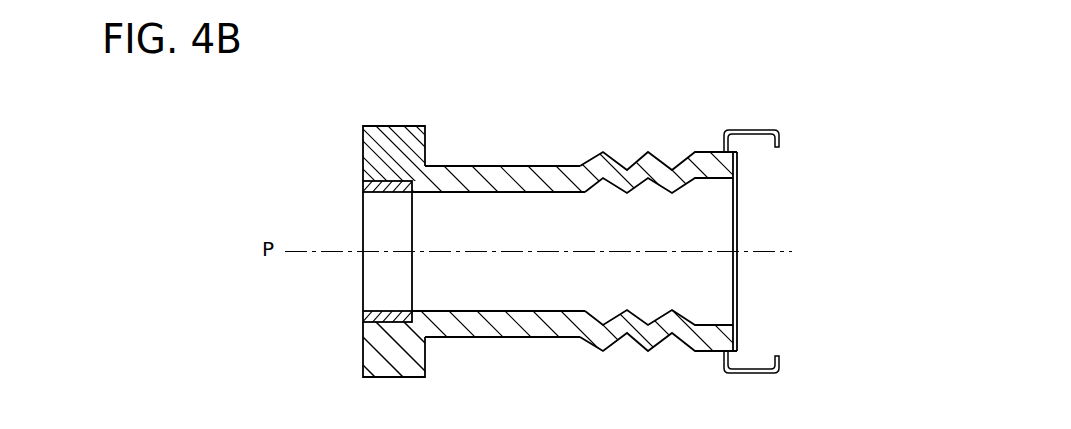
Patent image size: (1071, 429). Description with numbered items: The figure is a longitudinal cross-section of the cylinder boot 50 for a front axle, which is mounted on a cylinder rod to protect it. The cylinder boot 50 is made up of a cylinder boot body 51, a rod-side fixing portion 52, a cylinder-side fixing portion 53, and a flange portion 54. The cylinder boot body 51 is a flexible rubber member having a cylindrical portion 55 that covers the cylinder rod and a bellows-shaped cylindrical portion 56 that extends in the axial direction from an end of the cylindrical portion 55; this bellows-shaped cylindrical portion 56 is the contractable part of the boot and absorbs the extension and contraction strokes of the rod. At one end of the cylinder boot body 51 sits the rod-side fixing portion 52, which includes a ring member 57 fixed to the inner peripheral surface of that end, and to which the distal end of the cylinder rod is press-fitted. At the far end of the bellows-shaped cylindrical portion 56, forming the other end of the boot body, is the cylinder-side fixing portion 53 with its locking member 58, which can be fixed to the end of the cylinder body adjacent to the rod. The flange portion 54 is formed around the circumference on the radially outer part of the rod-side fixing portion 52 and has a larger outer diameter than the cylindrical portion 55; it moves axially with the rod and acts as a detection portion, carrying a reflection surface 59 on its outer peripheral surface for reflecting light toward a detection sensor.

The cylinder boot 50 is at (582, 98).
The cylinder boot body 51 is at (505, 338).
The rod-side fixing portion 52 is at (362, 334).
The cylinder-side fixing portion 53 is at (737, 165).
The flange portion 54 is at (402, 142).
The cylindrical portion 55 is at (493, 166).
The bellows-shaped cylindrical portion 56 is at (648, 152).
The ring member 57 is at (364, 185).
The locking member 58 is at (779, 133).
The reflection surface 59 is at (395, 126).